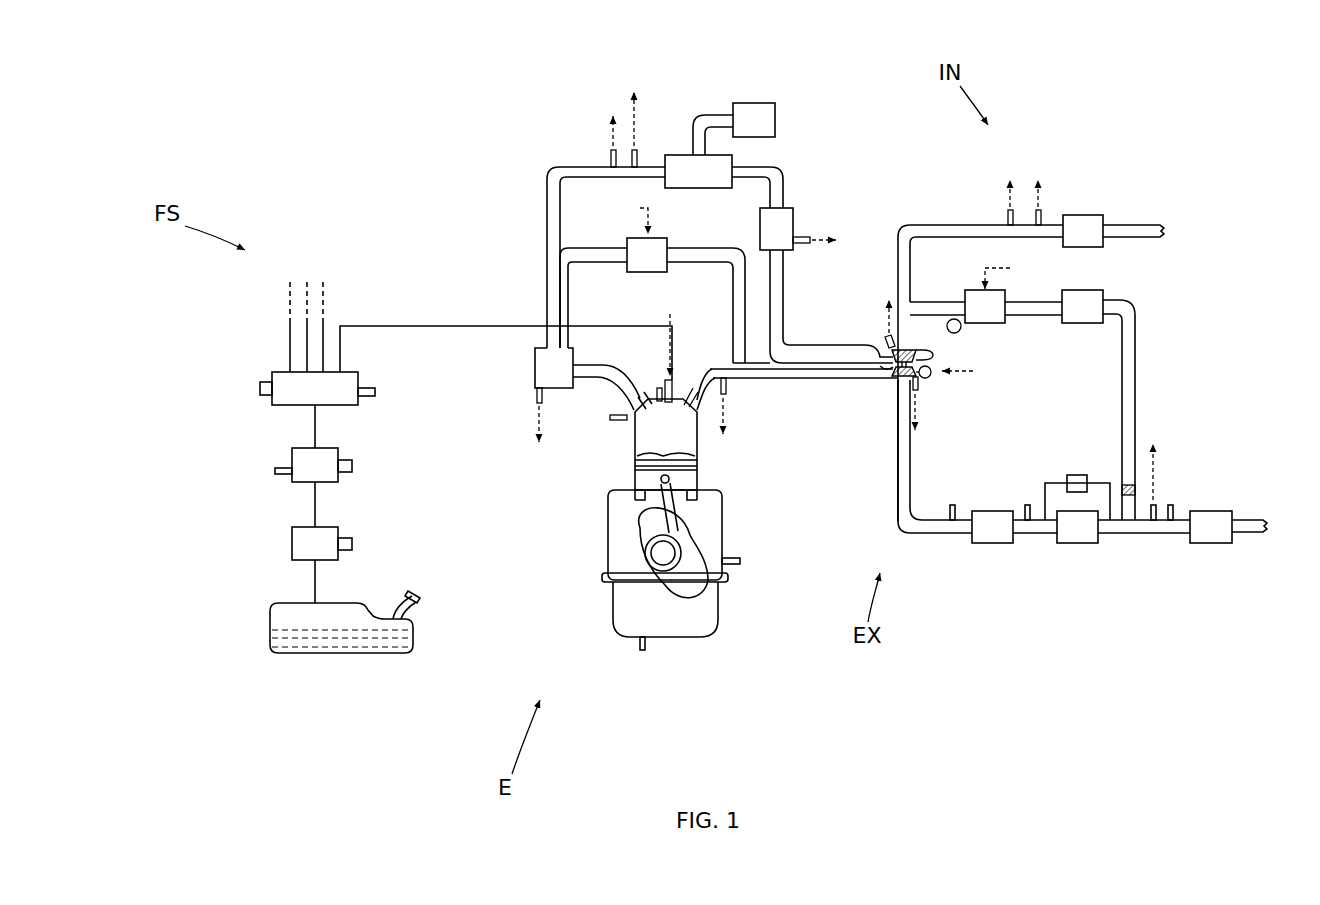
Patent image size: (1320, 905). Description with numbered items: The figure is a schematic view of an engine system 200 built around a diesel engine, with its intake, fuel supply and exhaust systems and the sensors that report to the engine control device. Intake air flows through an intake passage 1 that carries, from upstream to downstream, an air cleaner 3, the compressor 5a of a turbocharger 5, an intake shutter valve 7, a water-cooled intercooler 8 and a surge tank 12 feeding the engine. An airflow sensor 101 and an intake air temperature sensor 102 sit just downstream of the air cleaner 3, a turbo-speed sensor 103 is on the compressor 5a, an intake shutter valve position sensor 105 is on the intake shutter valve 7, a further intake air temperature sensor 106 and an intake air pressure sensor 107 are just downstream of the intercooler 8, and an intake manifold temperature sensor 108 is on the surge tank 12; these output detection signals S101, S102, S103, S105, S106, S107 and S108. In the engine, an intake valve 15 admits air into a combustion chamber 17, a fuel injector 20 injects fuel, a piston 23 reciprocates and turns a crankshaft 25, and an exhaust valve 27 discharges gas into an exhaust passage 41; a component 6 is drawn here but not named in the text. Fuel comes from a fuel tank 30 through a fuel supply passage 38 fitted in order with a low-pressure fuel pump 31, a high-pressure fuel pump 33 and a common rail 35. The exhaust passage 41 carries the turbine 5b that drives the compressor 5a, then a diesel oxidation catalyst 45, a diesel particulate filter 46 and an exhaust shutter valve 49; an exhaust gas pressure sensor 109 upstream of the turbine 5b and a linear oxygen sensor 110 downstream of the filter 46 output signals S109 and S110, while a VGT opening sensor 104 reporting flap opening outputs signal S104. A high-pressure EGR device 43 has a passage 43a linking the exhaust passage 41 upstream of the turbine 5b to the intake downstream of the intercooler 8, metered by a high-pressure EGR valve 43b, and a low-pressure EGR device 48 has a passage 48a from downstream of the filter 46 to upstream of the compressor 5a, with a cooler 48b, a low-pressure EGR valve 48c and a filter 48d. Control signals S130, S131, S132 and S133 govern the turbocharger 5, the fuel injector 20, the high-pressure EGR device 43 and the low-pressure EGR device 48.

The intake passage 1 is at (547, 215).
The air cleaner 3 is at (1103, 222).
The turbocharger 5 is at (940, 360).
The compressor 5a is at (954, 325).
The turbine 5b is at (895, 400).
The exhaust junction 6 is at (890, 378).
The intake shutter valve 7 is at (760, 228).
The intercooler 8 is at (693, 150).
The surge tank 12 is at (535, 370).
The intake valve 15 is at (635, 400).
The combustion chamber 17 is at (650, 449).
The fuel injector 20 is at (657, 390).
The piston 23 is at (645, 481).
The crankshaft 25 is at (663, 555).
The exhaust valve 27 is at (690, 392).
The fuel tank 30 is at (270, 617).
The low-pressure fuel pump 31 is at (292, 545).
The high-pressure fuel pump 33 is at (338, 452).
The common rail 35 is at (272, 395).
The fuel supply passage 38 is at (446, 326).
The exhaust passage 41 is at (835, 379).
The high-pressure EGR device 43 is at (640, 292).
The high-pressure EGR passage 43a is at (733, 284).
The high-pressure EGR valve 43b is at (667, 245).
The diesel oxidation catalyst 45 is at (990, 545).
The diesel particulate filter 46 is at (1077, 545).
The low-pressure EGR device 48 is at (1143, 285).
The low-pressure EGR passage 48a is at (1137, 350).
The low-pressure EGR cooler 48b is at (1083, 323).
The low-pressure EGR valve 48c is at (968, 292).
The low-pressure EGR filter 48d is at (1128, 497).
The exhaust shutter valve 49 is at (1215, 545).
The airflow sensor 101 is at (1041, 212).
The intake air temperature sensor 102 is at (1008, 212).
The turbo-speed sensor 103 is at (887, 341).
The VGT opening sensor 104 is at (921, 382).
The intake shutter valve position sensor 105 is at (803, 237).
The intake air temperature sensor 106 is at (637, 158).
The intake air pressure sensor 107 is at (611, 162).
The intake manifold temperature sensor 108 is at (537, 399).
The exhaust gas pressure sensor 109 is at (723, 378).
The linear O2 sensor 110 is at (1153, 522).
The engine system 200 is at (1235, 150).
The detection signal S101 is at (1057, 179).
The detection signal S102 is at (990, 179).
The detection signal S103 is at (862, 302).
The detection signal S104 is at (946, 413).
The detection signal S105 is at (849, 240).
The detection signal S106 is at (633, 105).
The detection signal S107 is at (592, 118).
The detection signal S108 is at (532, 437).
The detection signal S109 is at (741, 428).
The detection signal S110 is at (1170, 458).
The control signal S130 is at (983, 370).
The control signal S131 is at (680, 332).
The control signal S132 is at (612, 214).
The control signal S133 is at (1026, 272).